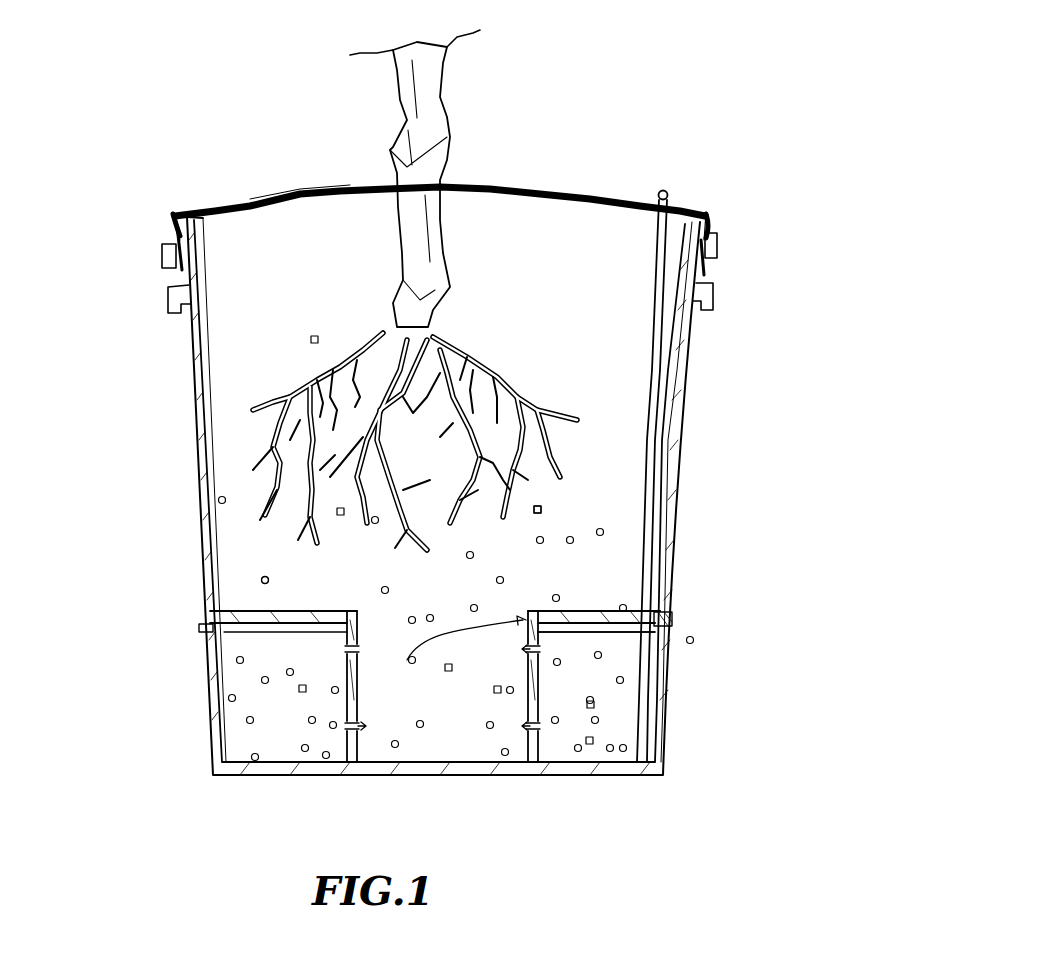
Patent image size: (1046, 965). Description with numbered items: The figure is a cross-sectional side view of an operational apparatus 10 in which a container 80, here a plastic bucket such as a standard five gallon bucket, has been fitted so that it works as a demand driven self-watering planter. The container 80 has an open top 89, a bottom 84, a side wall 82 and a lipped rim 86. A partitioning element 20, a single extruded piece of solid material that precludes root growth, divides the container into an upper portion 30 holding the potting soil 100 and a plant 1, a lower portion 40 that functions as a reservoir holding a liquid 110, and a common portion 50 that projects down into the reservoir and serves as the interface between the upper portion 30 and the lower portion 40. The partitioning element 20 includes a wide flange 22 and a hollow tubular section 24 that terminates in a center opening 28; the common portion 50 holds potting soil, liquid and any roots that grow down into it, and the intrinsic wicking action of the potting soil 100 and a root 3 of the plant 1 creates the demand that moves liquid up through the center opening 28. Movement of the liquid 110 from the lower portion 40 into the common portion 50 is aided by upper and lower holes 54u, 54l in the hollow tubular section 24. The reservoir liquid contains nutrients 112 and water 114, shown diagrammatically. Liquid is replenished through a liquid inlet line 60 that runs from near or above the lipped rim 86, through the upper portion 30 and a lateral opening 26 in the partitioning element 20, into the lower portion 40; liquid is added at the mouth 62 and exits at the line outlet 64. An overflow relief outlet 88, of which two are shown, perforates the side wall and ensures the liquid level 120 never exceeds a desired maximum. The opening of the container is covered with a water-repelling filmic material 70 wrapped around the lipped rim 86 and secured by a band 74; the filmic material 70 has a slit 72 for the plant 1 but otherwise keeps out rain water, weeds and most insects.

The plant 1 is at (455, 128).
The root 3 is at (282, 485).
The operational apparatus 10 is at (780, 209).
The partitioning element 20 is at (587, 598).
The wide flange 22 is at (275, 617).
The hollow tubular section 24 is at (361, 653).
The lateral opening 26 is at (657, 613).
The center opening 28 is at (368, 617).
The upper portion 30 is at (560, 341).
The lower portion 40 is at (309, 752).
The common portion 50 is at (474, 709).
The upper holes 54u is at (358, 659).
The lower holes 54l is at (347, 727).
The liquid inlet line 60 is at (662, 335).
The mouth 62 is at (664, 189).
The line outlet 64 is at (646, 768).
The filmic material 70 is at (217, 198).
The slit 72 is at (385, 188).
The band 74 is at (160, 258).
The container 80 is at (730, 381).
The side wall 82 is at (190, 395).
The bottom 84 is at (432, 775).
The lipped rim 86 is at (168, 219).
The overflow relief outlet 88 is at (208, 626).
The open top 89 is at (297, 186).
The potting soil 100 is at (505, 272).
The liquid 110 is at (623, 635).
The nutrients 112 is at (540, 508).
The water 114 is at (266, 578).
The liquid level 120 is at (603, 635).